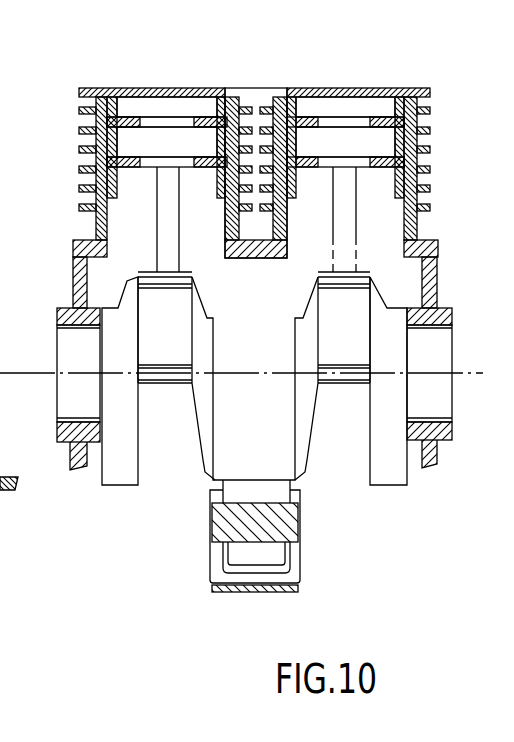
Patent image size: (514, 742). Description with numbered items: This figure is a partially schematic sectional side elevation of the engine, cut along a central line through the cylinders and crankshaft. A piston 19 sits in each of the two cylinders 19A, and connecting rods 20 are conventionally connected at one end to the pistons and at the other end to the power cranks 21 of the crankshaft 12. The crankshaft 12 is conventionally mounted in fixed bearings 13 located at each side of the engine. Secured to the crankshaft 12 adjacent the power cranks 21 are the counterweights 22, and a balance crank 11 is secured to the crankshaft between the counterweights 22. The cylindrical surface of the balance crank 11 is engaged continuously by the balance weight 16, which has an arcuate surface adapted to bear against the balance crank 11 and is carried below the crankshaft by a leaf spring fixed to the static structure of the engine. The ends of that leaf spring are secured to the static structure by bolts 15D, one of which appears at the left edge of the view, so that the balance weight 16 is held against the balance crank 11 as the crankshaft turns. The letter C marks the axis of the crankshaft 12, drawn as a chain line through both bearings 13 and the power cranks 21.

The balance crank 11 is at (310, 463).
The crankshaft 12 is at (57, 344).
The fixed bearings 13 is at (57, 420).
The bolts 15D is at (2, 520).
The balance weight 16 is at (304, 553).
The piston 19 is at (145, 87).
The cylinders 19A is at (84, 87).
The connecting rods 20 is at (180, 219).
The power cranks 21 is at (199, 278).
The counterweights 22 is at (112, 485).
The crankshaft axis C is at (241, 395).